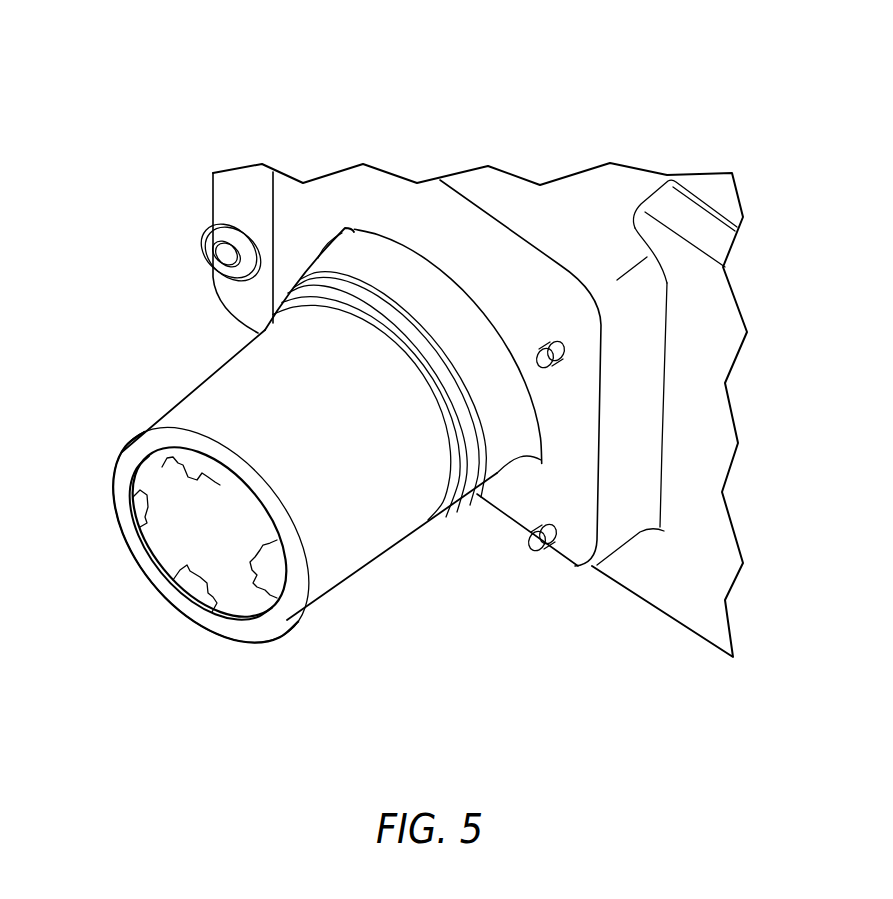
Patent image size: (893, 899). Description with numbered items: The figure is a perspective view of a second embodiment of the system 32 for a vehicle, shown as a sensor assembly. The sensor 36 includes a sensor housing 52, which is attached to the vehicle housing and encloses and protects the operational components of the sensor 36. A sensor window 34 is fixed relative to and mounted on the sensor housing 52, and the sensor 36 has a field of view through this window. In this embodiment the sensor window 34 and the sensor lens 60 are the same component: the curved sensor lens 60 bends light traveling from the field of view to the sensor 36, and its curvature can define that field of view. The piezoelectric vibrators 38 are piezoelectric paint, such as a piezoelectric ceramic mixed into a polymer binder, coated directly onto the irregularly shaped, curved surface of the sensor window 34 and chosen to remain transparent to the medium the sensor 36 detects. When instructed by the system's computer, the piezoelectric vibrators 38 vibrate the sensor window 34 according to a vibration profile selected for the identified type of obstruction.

The system 32 is at (277, 72).
The sensor window 34 is at (178, 523).
The sensor 36 is at (500, 522).
The piezoelectric vibrator 38 is at (193, 467).
The sensor housing 52 is at (581, 566).
The sensor lens 60 is at (192, 542).